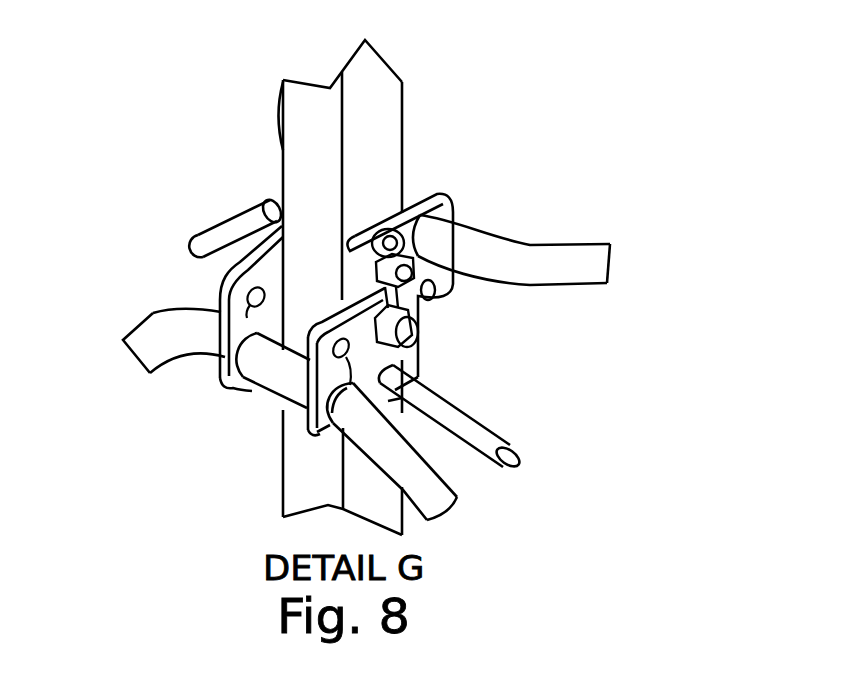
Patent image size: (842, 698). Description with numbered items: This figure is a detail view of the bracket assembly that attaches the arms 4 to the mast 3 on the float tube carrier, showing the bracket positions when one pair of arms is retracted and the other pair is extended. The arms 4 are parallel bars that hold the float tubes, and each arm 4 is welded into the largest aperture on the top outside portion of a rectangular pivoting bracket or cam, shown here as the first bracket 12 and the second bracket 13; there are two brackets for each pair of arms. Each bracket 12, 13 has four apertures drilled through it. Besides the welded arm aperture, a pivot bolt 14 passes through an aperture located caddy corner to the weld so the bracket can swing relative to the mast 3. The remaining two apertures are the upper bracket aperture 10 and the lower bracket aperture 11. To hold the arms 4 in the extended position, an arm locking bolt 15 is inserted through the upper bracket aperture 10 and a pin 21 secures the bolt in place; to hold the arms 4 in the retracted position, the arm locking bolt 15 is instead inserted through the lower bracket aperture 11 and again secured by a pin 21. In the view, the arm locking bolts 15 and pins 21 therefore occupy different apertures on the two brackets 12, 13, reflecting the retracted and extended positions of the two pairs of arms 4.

The mast 3 is at (382, 120).
The arm 4 is at (155, 332).
The upper bracket aperture 10 is at (219, 303).
The lower bracket aperture 11 is at (437, 291).
The first bracket 12 is at (255, 395).
The second bracket 13 is at (436, 197).
The pivot bolt 14 is at (405, 333).
The arm locking bolt 15 is at (207, 233).
The pin 21 is at (392, 229).